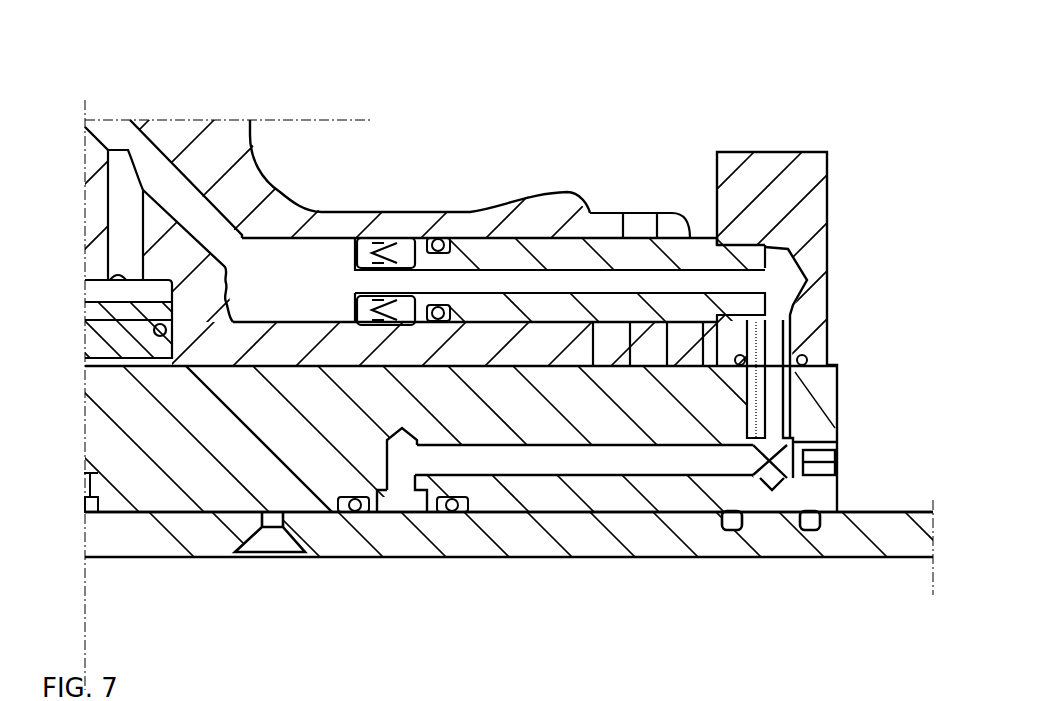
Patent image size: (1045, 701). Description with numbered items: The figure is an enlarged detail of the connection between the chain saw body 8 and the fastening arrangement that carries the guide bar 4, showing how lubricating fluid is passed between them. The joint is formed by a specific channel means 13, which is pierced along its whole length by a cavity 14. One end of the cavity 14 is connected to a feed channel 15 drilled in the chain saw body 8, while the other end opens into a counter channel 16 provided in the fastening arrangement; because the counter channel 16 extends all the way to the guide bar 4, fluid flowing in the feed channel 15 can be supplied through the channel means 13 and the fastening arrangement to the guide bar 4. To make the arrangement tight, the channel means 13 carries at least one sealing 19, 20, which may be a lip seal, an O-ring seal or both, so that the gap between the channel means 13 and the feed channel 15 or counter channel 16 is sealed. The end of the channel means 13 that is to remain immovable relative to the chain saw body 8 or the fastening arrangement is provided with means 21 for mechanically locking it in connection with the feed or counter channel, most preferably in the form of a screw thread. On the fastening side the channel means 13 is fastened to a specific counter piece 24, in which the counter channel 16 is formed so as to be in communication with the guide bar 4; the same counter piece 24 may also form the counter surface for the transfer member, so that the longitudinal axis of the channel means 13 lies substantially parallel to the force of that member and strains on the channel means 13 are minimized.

The guide bar 4 is at (663, 543).
The chain saw body 8 is at (182, 135).
The channel means 13 is at (615, 257).
The cavity 14 is at (515, 280).
The feed channel 15 is at (292, 262).
The counter channel 16 is at (780, 282).
The sealing 19 is at (392, 257).
The sealing 20 is at (440, 235).
The means for mechanically locking 21 is at (743, 233).
The counter piece 24 is at (813, 183).